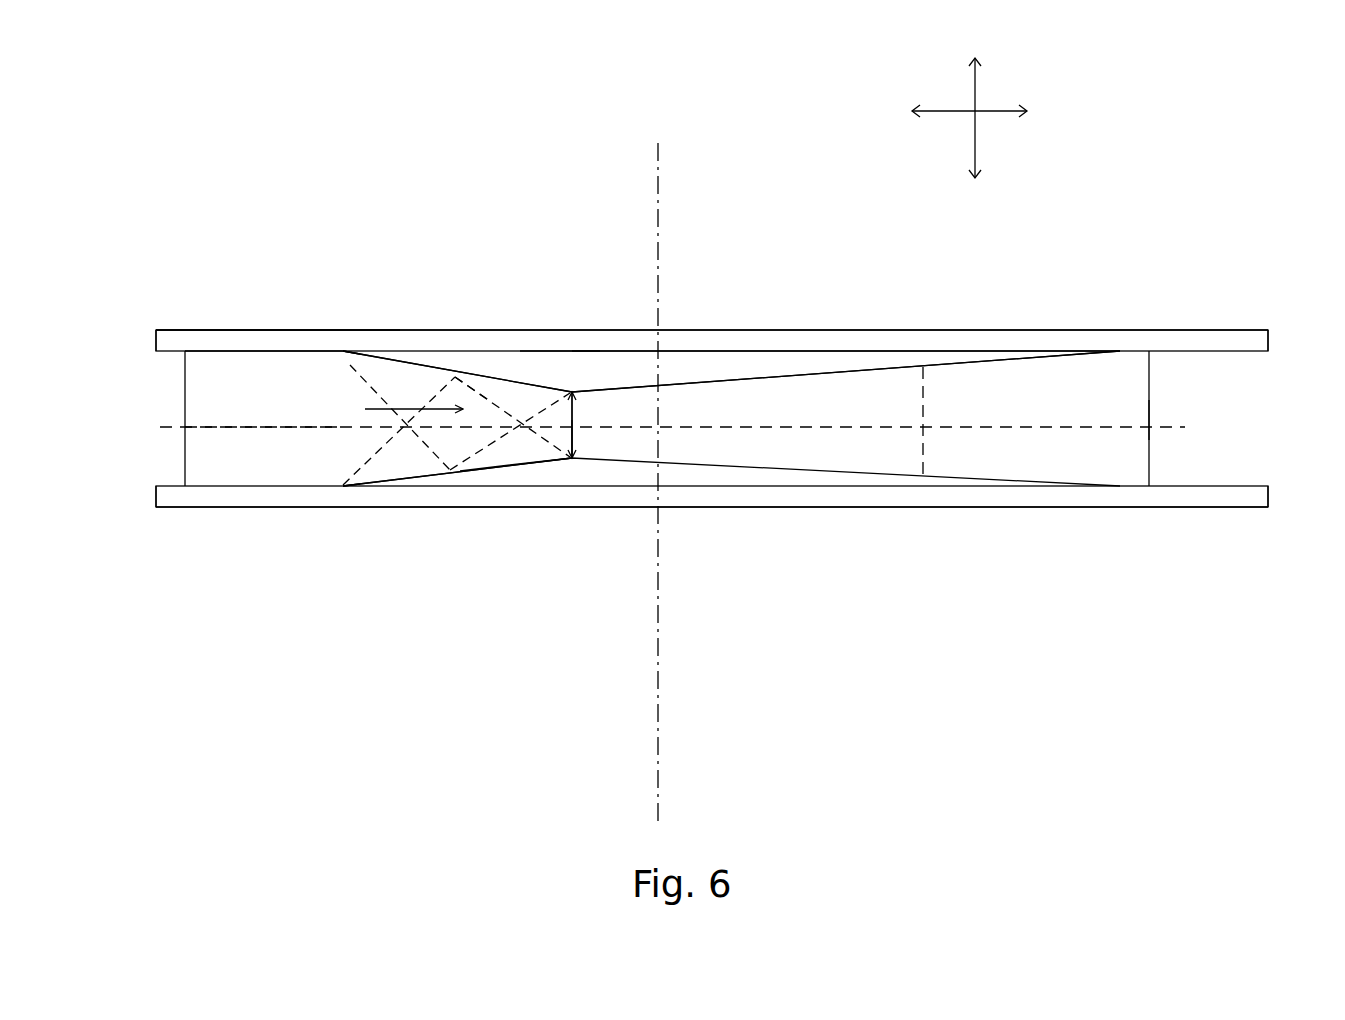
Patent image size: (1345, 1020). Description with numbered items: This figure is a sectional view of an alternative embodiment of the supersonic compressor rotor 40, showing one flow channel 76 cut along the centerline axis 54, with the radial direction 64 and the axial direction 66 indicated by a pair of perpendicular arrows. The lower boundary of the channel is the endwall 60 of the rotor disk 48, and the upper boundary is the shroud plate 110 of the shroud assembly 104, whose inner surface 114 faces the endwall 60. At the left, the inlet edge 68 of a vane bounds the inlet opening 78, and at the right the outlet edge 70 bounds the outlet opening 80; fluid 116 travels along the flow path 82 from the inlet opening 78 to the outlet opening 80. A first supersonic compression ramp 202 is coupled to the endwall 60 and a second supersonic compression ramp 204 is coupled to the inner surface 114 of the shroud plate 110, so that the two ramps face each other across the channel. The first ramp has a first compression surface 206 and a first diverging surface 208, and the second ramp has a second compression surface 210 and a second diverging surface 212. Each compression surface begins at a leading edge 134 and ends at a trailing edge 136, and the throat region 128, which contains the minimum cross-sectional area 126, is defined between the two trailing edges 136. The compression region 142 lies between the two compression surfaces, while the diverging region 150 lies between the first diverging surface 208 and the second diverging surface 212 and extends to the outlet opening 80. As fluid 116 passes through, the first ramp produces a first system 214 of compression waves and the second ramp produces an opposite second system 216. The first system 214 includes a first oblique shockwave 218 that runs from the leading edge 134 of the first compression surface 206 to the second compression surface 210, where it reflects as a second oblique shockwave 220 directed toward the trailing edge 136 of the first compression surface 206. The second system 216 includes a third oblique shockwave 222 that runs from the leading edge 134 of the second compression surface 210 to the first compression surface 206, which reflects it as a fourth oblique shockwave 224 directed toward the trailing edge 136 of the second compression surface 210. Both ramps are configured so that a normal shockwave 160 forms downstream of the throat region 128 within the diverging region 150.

The supersonic compressor rotor 40 is at (238, 145).
The rotor disk 48 is at (1028, 567).
The centerline axis 54 is at (658, 192).
The endwall 60 is at (843, 498).
The radial direction 64 is at (987, 112).
The axial direction 66 is at (975, 90).
The inlet edge 68 is at (185, 460).
The outlet edge 70 is at (1150, 452).
The flow channel 76 is at (307, 370).
The inlet opening 78 is at (135, 373).
The outlet opening 80 is at (1252, 370).
The flow path 82 is at (1155, 418).
The shroud assembly 104 is at (1012, 302).
The shroud plate 110 is at (923, 338).
The inner surface 114 is at (777, 352).
The fluid 116 is at (378, 408).
The minimum cross-sectional area 126 is at (574, 415).
The throat region 128 is at (592, 444).
The leading edge 134 is at (343, 351).
The trailing edge 136 is at (572, 392).
The compression region 142 is at (313, 452).
The diverging region 150 is at (1028, 372).
The normal shockwave 160 is at (925, 418).
The first supersonic compression ramp 202 is at (530, 468).
The second supersonic compression ramp 204 is at (555, 357).
The first compression surface 206 is at (485, 470).
The first diverging surface 208 is at (720, 466).
The second compression surface 210 is at (477, 375).
The second diverging surface 212 is at (690, 380).
The first system of compression waves 214 is at (385, 370).
The second system of compression waves 216 is at (413, 463).
The first oblique shockwave 218 is at (350, 365).
The second oblique shockwave 220 is at (547, 408).
The third oblique shockwave 222 is at (432, 472).
The fourth oblique shockwave 224 is at (500, 405).